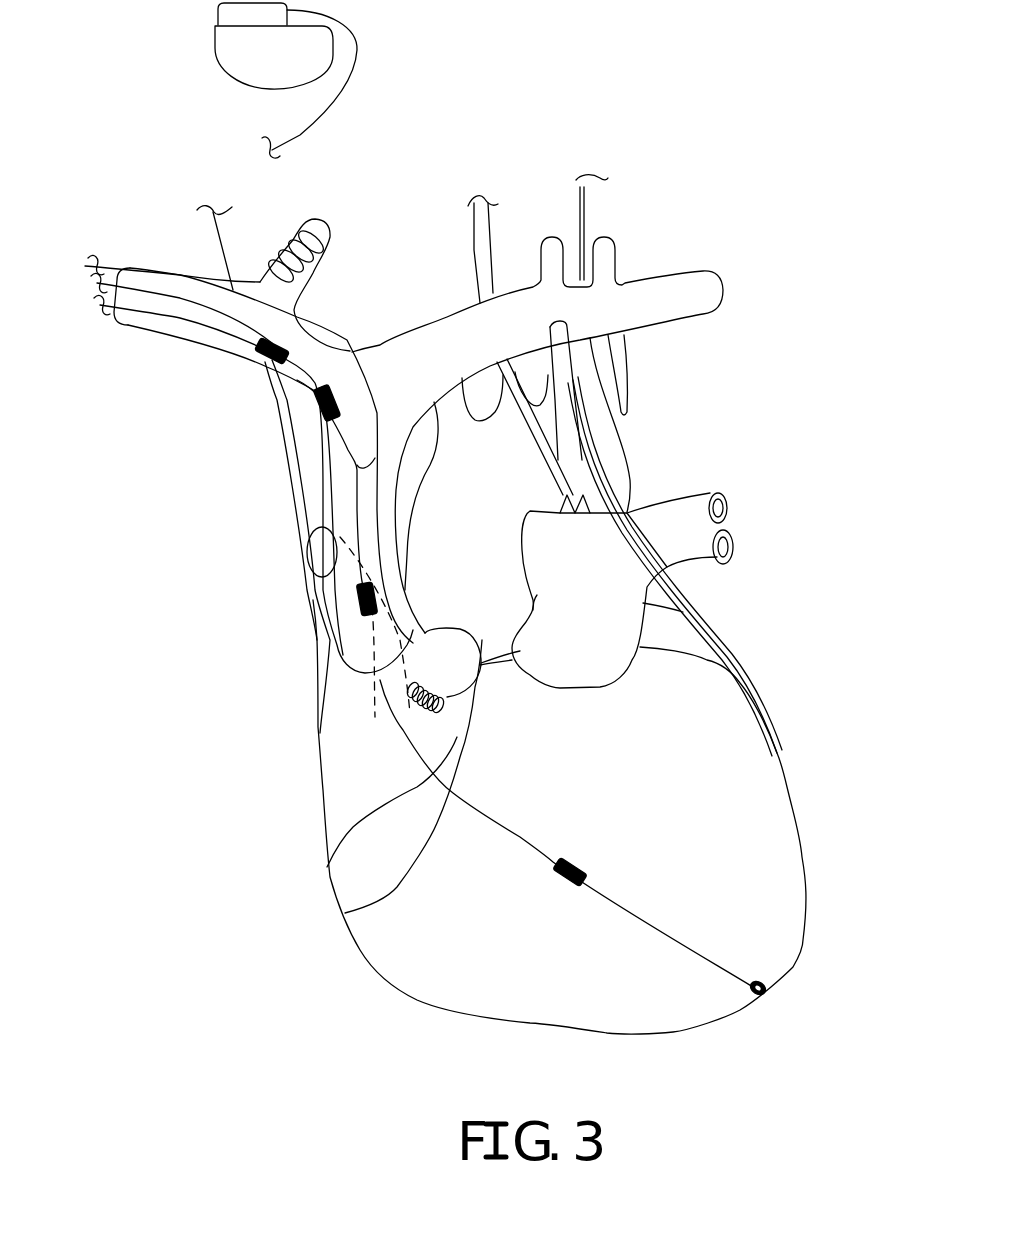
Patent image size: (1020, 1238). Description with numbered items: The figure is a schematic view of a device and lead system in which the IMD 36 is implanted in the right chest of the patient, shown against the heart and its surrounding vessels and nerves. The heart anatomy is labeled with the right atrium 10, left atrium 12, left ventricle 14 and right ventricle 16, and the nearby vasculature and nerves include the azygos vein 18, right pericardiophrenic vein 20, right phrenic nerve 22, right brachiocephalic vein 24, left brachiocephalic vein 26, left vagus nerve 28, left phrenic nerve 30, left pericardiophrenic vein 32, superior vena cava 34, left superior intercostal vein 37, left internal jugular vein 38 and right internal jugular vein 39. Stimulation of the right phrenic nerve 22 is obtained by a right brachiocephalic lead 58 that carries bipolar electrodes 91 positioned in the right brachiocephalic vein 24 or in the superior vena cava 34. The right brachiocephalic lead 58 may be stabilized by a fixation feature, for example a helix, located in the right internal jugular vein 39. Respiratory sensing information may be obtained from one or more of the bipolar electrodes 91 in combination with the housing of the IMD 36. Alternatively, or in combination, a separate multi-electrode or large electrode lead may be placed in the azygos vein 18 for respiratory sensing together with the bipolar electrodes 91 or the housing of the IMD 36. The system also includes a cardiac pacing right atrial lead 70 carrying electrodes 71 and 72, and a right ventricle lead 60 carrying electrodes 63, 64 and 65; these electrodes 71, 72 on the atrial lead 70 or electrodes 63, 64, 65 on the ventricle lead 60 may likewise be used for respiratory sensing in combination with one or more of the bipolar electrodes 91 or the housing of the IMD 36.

The right atrium 10 is at (345, 913).
The left atrium 12 is at (712, 685).
The left ventricle 14 is at (786, 918).
The right ventricle 16 is at (435, 980).
The azygos vein 18 is at (387, 640).
The right pericardiophrenic vein 20 is at (290, 447).
The right phrenic nerve 22 is at (293, 397).
The right brachiocephalic vein 24 is at (227, 350).
The left brachiocephalic vein 26 is at (477, 343).
The left vagus nerve 28 is at (472, 247).
The left phrenic nerve 30 is at (580, 212).
The left pericardiophrenic vein 32 is at (583, 425).
The superior vena cava 34 is at (343, 503).
The IMD 36 is at (222, 45).
The left superior intercostal vein 37 is at (627, 393).
The left internal jugular vein 38 is at (552, 252).
The right internal jugular vein 39 is at (310, 232).
The right brachiocephalic lead 58 is at (180, 322).
The right ventricle lead 60 is at (167, 300).
The electrode 63 is at (360, 603).
The electrode 64 is at (578, 866).
The electrode 65 is at (770, 985).
The cardiac pacing right atrial lead 70 is at (118, 268).
The electrode 71 is at (470, 687).
The electrode 72 is at (462, 650).
The bipolar electrodes 91 is at (283, 344).